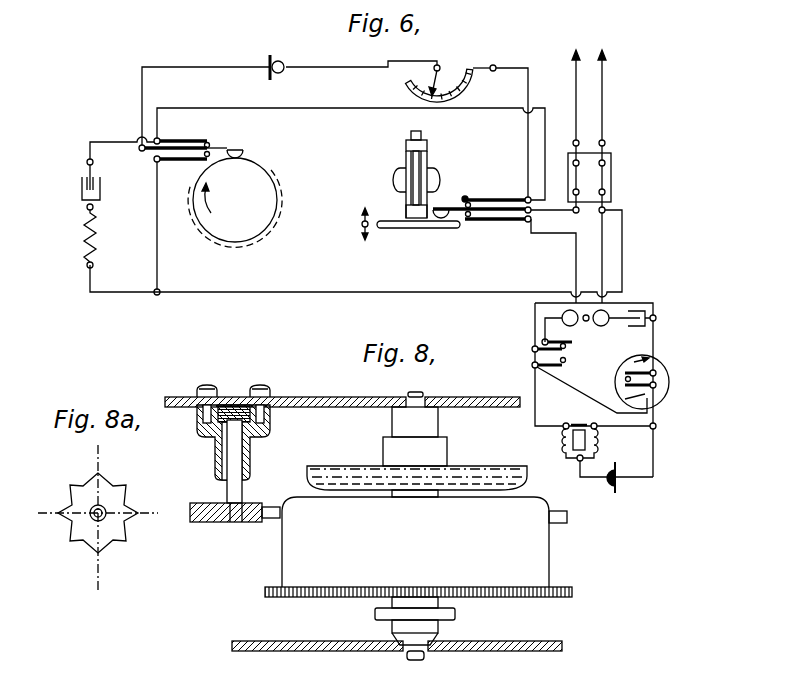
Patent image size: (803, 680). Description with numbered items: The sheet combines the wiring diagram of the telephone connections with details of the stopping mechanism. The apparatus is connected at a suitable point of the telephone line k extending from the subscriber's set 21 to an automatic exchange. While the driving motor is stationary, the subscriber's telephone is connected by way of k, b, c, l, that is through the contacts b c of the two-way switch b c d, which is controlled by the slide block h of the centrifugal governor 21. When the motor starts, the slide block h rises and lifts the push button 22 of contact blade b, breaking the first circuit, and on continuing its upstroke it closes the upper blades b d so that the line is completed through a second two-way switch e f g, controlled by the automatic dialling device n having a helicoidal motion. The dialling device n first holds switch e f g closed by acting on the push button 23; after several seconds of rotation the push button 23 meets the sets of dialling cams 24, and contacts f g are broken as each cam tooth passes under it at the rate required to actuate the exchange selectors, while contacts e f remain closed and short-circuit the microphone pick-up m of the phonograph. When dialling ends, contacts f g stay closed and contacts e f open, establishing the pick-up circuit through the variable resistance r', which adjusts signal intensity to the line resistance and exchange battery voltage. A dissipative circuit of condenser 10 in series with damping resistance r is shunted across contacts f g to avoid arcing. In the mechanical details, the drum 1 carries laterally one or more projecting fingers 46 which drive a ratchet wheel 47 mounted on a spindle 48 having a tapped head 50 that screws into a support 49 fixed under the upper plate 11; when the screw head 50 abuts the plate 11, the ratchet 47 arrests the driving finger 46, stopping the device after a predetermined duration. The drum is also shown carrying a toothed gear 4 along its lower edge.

In FIG. 8, the drum 1 is at (537, 558).
In FIG. 8, the gear wheel 4 is at (572, 592).
In FIG. 6, the condenser 10 is at (81, 186).
In FIG. 8, the upper plate 11 is at (330, 396).
In FIG. 6, the centrifugal governor 21 is at (392, 187).
In FIG. 6, the push button 22 is at (442, 221).
In FIG. 6, the push button 23 is at (244, 152).
In FIG. 6, the dialling cams 24 is at (201, 242).
In FIG. 8, the projecting finger 46 is at (268, 521).
In FIG. 8, the ratchet wheel 47 is at (197, 503).
In FIG. 8A, the ratchet wheel 47 is at (70, 525).
In FIG. 8, the spindle 48 is at (243, 496).
In FIG. 8, the support 49 is at (258, 456).
In FIG. 8, the tapped head 50 is at (233, 410).
In FIG. 6, the microphone pick-up m is at (288, 61).
In FIG. 6, the variable resistance r' is at (439, 85).
In FIG. 6, the telephone line k is at (589, 123).
In FIG. 6, the damping resistance r is at (73, 236).
In FIG. 6, the contact blade e is at (186, 141).
In FIG. 6, the contact blade f is at (224, 147).
In FIG. 6, the contact blade g is at (168, 161).
In FIG. 6, the dialling device n is at (255, 192).
In FIG. 6, the slide block h is at (397, 230).
In FIG. 6, the contact blade b is at (447, 208).
In FIG. 6, the contact blade c is at (492, 222).
In FIG. 6, the contact blade d is at (508, 197).
In FIG. 6, the subscriber's telephone circuit l is at (600, 380).